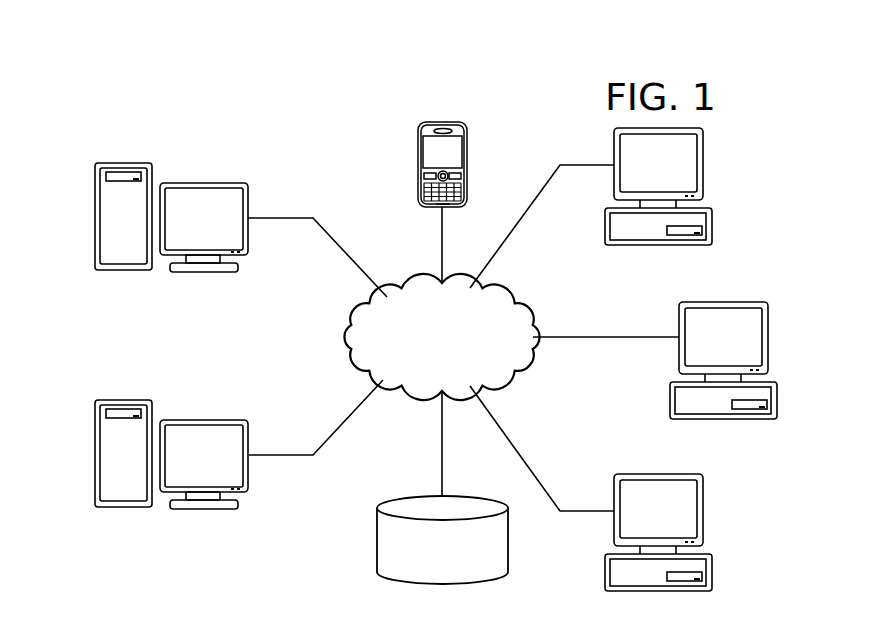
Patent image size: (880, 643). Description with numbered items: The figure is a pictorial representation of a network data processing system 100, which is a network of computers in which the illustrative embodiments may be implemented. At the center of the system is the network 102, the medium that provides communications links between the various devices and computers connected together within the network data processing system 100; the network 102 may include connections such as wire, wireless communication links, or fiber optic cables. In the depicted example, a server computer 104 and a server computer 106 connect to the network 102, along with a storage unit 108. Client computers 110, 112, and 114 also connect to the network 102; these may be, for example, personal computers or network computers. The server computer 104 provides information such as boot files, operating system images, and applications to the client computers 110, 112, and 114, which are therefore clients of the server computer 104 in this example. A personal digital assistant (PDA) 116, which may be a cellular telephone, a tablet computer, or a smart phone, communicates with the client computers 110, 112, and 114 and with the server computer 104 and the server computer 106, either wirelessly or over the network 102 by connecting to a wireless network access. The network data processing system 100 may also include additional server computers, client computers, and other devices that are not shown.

The network data processing system 100 is at (276, 84).
The network 102 is at (418, 392).
The server computer 104 is at (96, 205).
The server computer 106 is at (96, 466).
The storage unit 108 is at (376, 542).
The client computer 110 is at (712, 227).
The client computer 112 is at (777, 398).
The client computer 114 is at (712, 572).
The personal digital assistant (PDA) 116 is at (447, 122).